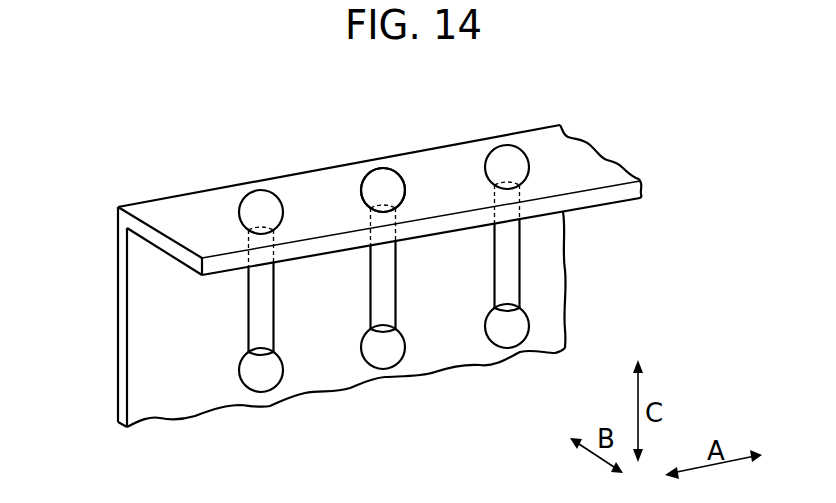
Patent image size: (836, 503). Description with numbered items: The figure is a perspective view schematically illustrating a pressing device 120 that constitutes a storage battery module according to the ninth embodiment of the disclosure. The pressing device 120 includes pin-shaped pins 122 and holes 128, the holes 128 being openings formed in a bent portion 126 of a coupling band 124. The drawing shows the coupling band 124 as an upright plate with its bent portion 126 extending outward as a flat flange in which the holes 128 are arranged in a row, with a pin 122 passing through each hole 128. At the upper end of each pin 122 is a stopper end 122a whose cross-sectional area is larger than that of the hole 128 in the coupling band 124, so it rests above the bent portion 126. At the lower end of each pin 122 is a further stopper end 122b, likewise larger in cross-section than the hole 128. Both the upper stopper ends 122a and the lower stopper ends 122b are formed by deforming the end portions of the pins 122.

The pressing device 120 is at (500, 81).
The pin 122 is at (416, 363).
The stopper end 122a is at (382, 175).
The stopper end 122b is at (389, 358).
The coupling band 124 is at (106, 289).
The bent portion 126 is at (203, 223).
The hole 128 is at (382, 210).